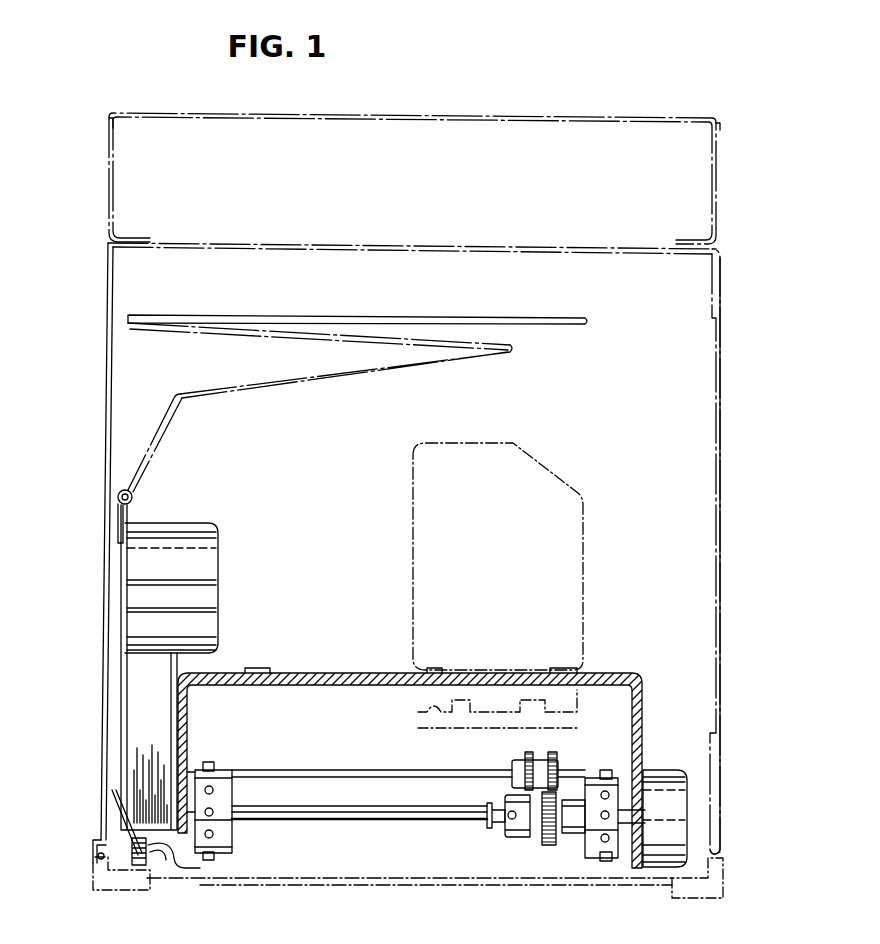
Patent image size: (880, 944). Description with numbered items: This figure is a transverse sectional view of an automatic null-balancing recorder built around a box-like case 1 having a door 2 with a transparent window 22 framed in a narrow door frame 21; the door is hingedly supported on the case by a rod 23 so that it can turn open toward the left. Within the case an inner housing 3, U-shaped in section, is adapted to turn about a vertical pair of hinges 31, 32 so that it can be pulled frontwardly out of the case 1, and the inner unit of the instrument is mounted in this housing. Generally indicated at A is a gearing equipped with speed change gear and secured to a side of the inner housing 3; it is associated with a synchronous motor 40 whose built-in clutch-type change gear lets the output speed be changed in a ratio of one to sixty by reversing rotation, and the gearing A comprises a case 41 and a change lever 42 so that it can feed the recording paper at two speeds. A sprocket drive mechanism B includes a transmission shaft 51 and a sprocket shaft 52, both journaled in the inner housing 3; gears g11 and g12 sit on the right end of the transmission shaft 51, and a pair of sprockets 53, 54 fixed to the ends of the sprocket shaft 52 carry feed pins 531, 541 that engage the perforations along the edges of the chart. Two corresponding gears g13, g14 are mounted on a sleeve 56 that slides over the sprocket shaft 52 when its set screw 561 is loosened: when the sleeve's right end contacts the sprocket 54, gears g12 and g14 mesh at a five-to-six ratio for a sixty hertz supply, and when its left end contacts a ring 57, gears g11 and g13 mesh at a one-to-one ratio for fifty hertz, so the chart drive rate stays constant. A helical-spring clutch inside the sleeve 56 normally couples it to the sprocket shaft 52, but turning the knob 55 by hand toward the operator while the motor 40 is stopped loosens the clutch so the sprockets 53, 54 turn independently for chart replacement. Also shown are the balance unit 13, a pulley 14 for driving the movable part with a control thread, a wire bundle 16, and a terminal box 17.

The case 1 is at (722, 452).
The door 2 is at (680, 897).
The inner housing 3 is at (312, 673).
The balance unit 13 is at (548, 470).
The pulley 14 is at (577, 728).
The wire bundle 16 is at (178, 405).
The terminal box 17 is at (577, 113).
The door frame 21 is at (87, 893).
The transparent window 22 is at (322, 880).
The rod 23 is at (93, 858).
The hinge 31 is at (162, 870).
The hinge 32 is at (186, 884).
The synchronous motor 40 is at (218, 548).
The case 41 is at (120, 683).
The change lever 42 is at (137, 866).
The transmission shaft 51 is at (340, 770).
The sprocket shaft 52 is at (318, 821).
The sprocket 53 is at (232, 830).
The feed pins 531 is at (214, 857).
The sprocket 54 is at (590, 862).
The feed pins 541 is at (612, 862).
The turnable knob 55 is at (662, 770).
The sleeve 56 is at (512, 837).
The set screw 561 is at (508, 812).
The ring 57 is at (488, 826).
The gear g11 is at (528, 752).
The gear g12 is at (554, 752).
The gear g13 is at (548, 845).
The gear g14 is at (586, 850).
The gearing A is at (113, 596).
The sprocket drive mechanism B is at (612, 740).